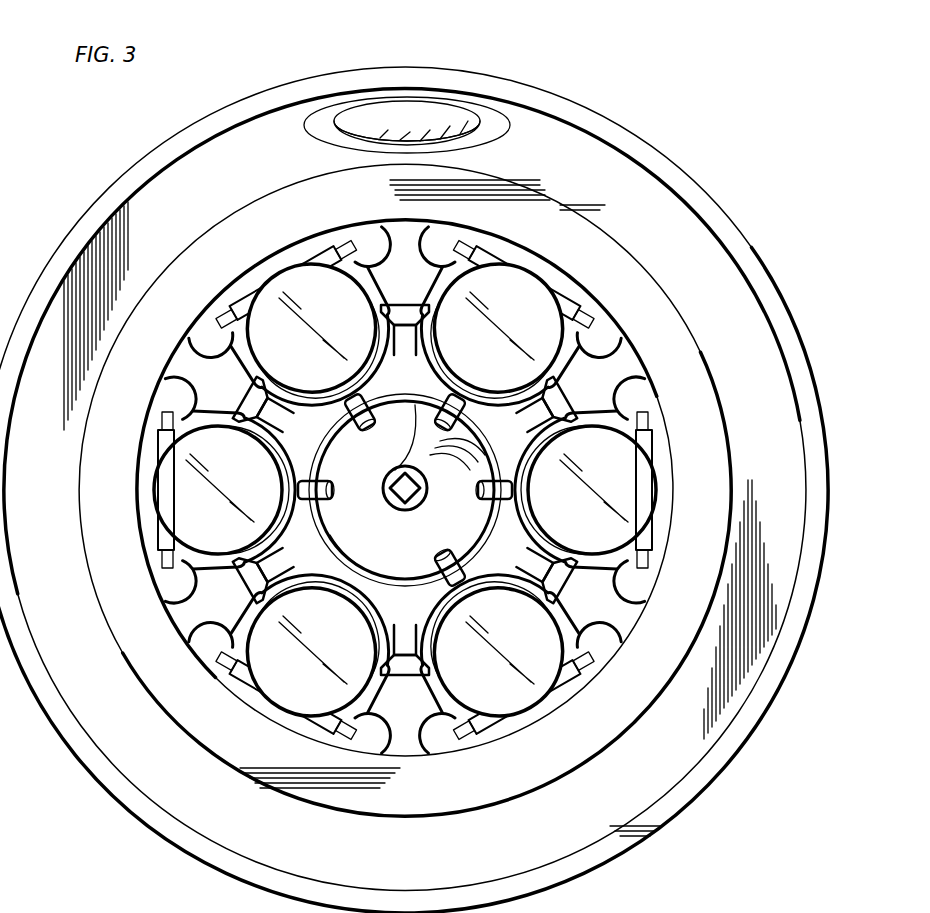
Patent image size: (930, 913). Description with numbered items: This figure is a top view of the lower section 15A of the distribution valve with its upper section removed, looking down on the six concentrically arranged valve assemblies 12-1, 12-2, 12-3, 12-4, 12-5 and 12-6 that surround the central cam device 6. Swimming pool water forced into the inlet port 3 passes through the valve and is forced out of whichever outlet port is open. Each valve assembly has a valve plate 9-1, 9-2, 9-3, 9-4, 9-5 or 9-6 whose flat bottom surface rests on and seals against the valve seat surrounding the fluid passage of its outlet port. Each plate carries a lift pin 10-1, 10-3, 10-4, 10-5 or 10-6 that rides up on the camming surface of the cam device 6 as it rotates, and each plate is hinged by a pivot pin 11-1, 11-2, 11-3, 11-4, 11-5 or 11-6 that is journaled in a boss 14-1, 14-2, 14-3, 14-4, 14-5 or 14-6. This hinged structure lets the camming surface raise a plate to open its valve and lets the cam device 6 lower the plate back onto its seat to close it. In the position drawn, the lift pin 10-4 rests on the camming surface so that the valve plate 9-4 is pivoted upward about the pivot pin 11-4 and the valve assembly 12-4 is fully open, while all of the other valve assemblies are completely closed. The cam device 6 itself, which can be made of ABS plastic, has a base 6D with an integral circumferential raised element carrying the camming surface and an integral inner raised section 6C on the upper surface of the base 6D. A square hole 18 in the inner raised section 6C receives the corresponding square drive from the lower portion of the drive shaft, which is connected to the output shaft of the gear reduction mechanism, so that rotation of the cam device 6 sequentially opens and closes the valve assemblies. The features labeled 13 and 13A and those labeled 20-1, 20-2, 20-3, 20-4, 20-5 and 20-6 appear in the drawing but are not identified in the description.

The inlet port 3 is at (435, 120).
The cam device 6 is at (418, 589).
The raised section 6C is at (432, 474).
The base 6D is at (325, 540).
The valve plate 9-1 is at (356, 644).
The valve plate 9-2 is at (231, 532).
The valve plate 9-3 is at (358, 311).
The valve plate 9-4 is at (545, 309).
The valve plate 9-5 is at (638, 479).
The valve plate 9-6 is at (503, 682).
The lift pin 10-1 is at (300, 482).
The lift pin 10-3 is at (345, 405).
The lift pin 10-4 is at (455, 400).
The lift pin 10-5 is at (510, 495).
The lift pin 10-6 is at (478, 582).
The pivot pin 11-1 is at (320, 735).
The pivot pin 11-2 is at (160, 432).
The pivot pin 11-3 is at (352, 205).
The pivot pin 11-4 is at (568, 310).
The pivot pin 11-5 is at (660, 410).
The pivot pin 11-6 is at (558, 682).
The valve assembly 12-1 is at (272, 655).
The valve assembly 12-2 is at (150, 496).
The valve assembly 12-3 is at (285, 280).
The valve assembly 12-4 is at (525, 285).
The valve assembly 12-5 is at (655, 492).
The valve assembly 12-6 is at (545, 735).
The housing inner wall 13 is at (592, 744).
The housing outer rim 13A is at (612, 850).
The boss 14-1 is at (298, 708).
The boss 14-2 is at (175, 418).
The boss 14-3 is at (320, 245).
The boss 14-4 is at (478, 248).
The boss 14-5 is at (650, 395).
The boss 14-6 is at (428, 668).
The lower section 15A is at (110, 839).
The square hole 18 is at (398, 481).
The slot 20-1 is at (252, 568).
The slot 20-2 is at (235, 415).
The slot 20-3 is at (420, 285).
The slot 20-4 is at (560, 382).
The slot 20-5 is at (600, 403).
The slot 20-6 is at (565, 600).